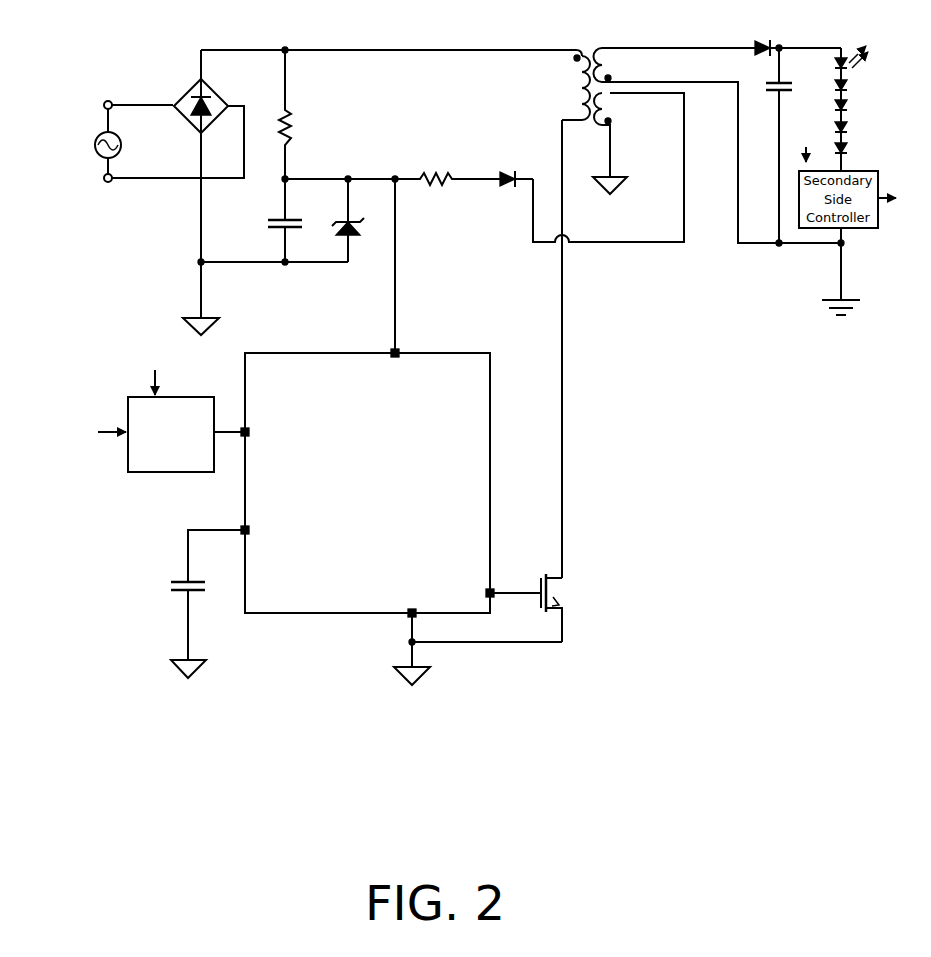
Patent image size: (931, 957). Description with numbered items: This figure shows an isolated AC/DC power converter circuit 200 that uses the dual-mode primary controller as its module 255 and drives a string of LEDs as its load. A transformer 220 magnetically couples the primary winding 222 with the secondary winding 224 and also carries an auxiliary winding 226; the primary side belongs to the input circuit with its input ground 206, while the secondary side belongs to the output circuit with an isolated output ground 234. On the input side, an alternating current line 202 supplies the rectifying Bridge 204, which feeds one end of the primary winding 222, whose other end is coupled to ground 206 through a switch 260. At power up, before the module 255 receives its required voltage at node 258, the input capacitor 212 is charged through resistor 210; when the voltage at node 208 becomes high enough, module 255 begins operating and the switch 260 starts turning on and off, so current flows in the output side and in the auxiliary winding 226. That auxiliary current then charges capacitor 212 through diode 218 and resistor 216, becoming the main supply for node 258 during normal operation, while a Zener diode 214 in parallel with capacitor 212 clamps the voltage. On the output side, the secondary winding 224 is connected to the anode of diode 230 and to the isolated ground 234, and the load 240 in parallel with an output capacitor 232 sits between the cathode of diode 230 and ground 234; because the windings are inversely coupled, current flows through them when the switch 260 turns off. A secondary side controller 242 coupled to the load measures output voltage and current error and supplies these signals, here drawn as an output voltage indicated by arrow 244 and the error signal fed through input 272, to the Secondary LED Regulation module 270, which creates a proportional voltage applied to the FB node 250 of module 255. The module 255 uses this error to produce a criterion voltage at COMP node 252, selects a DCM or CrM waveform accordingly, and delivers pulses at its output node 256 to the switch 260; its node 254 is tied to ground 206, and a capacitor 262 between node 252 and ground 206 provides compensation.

The isolated AC/DC power converter circuit 200 is at (657, 648).
The alternating current line 202 is at (123, 133).
The rectifying Bridge 204 is at (219, 90).
The input ground 206 is at (213, 301).
The node 208 is at (293, 173).
The resistor 210 is at (293, 98).
The input capacitor 212 is at (293, 250).
The Zener diode 214 is at (355, 256).
The resistor 216 is at (423, 210).
The diode 218 is at (494, 216).
The transformer 220 is at (693, 132).
The primary winding 222 is at (546, 88).
The secondary winding 224 is at (611, 70).
The auxiliary winding 226 is at (611, 113).
The diode 230 is at (791, 39).
The output capacitor 232 is at (784, 113).
The isolated output ground 234 is at (851, 293).
The load 240 is at (856, 106).
The secondary side controller 242 is at (884, 225).
The output voltage arrow 244 is at (795, 146).
The FB node 250 is at (249, 425).
The COMP node 252 is at (253, 520).
The node 254 is at (378, 605).
The module 255 is at (358, 481).
The output node 256 is at (454, 583).
The node 258 is at (384, 380).
The switch 260 is at (569, 603).
The capacitor 262 is at (143, 570).
The Secondary LED Regulation module 270 is at (178, 484).
The Vout-isolated ground input 272 is at (166, 390).